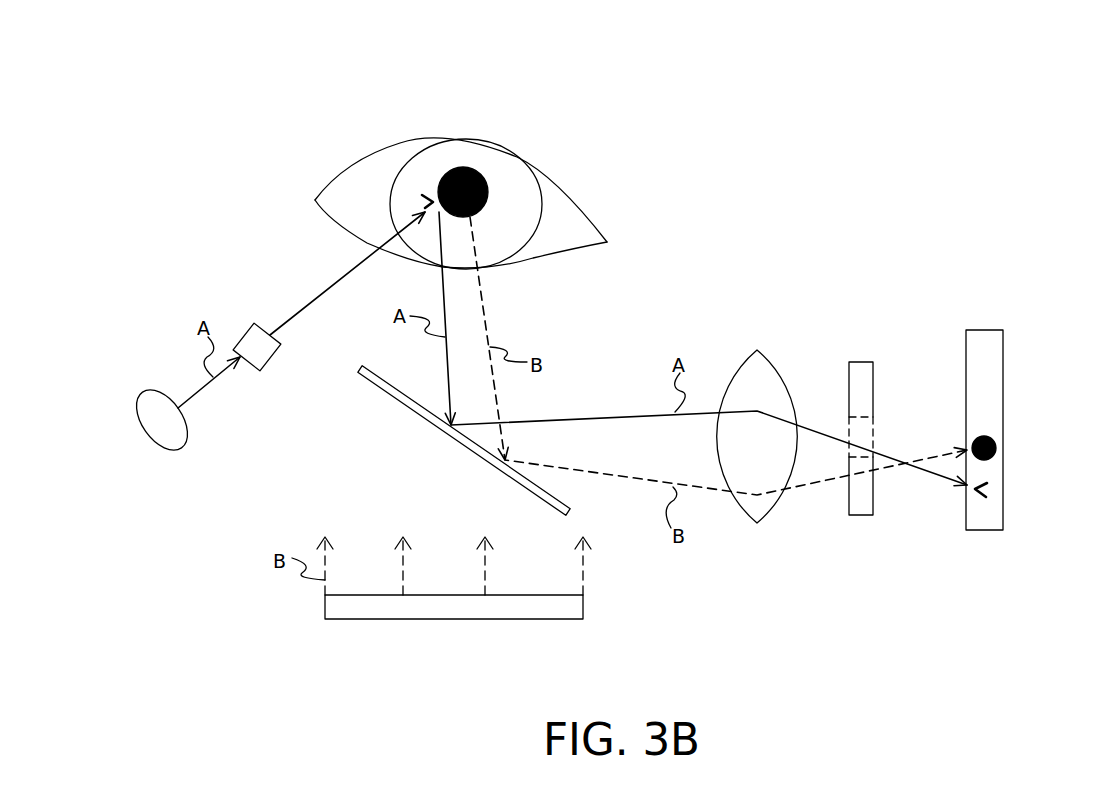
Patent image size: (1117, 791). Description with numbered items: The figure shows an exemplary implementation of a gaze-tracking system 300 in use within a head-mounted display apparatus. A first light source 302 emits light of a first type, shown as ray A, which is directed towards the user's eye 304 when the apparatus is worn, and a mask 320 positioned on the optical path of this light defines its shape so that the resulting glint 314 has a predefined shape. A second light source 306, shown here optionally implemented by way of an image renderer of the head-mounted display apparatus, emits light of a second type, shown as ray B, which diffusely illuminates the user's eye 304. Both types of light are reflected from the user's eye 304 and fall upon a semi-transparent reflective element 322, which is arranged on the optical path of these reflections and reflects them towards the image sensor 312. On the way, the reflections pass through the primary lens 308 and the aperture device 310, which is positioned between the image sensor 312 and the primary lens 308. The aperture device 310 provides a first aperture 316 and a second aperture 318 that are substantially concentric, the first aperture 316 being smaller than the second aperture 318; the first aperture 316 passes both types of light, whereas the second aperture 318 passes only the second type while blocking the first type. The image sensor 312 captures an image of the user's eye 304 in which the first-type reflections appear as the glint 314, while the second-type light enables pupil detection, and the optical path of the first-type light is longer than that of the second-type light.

The gaze-tracking system 300 is at (1038, 83).
The first light source 302 is at (137, 395).
The user's eye 304 is at (568, 187).
The second light source 306 is at (583, 605).
The primary lens 308 is at (760, 525).
The aperture device 310 is at (878, 310).
The image sensor 312 is at (988, 531).
The glint 314 is at (987, 488).
The first aperture 316 is at (874, 433).
The second aperture 318 is at (857, 515).
The mask 320 is at (246, 322).
The semi-transparent reflective element 322 is at (383, 389).